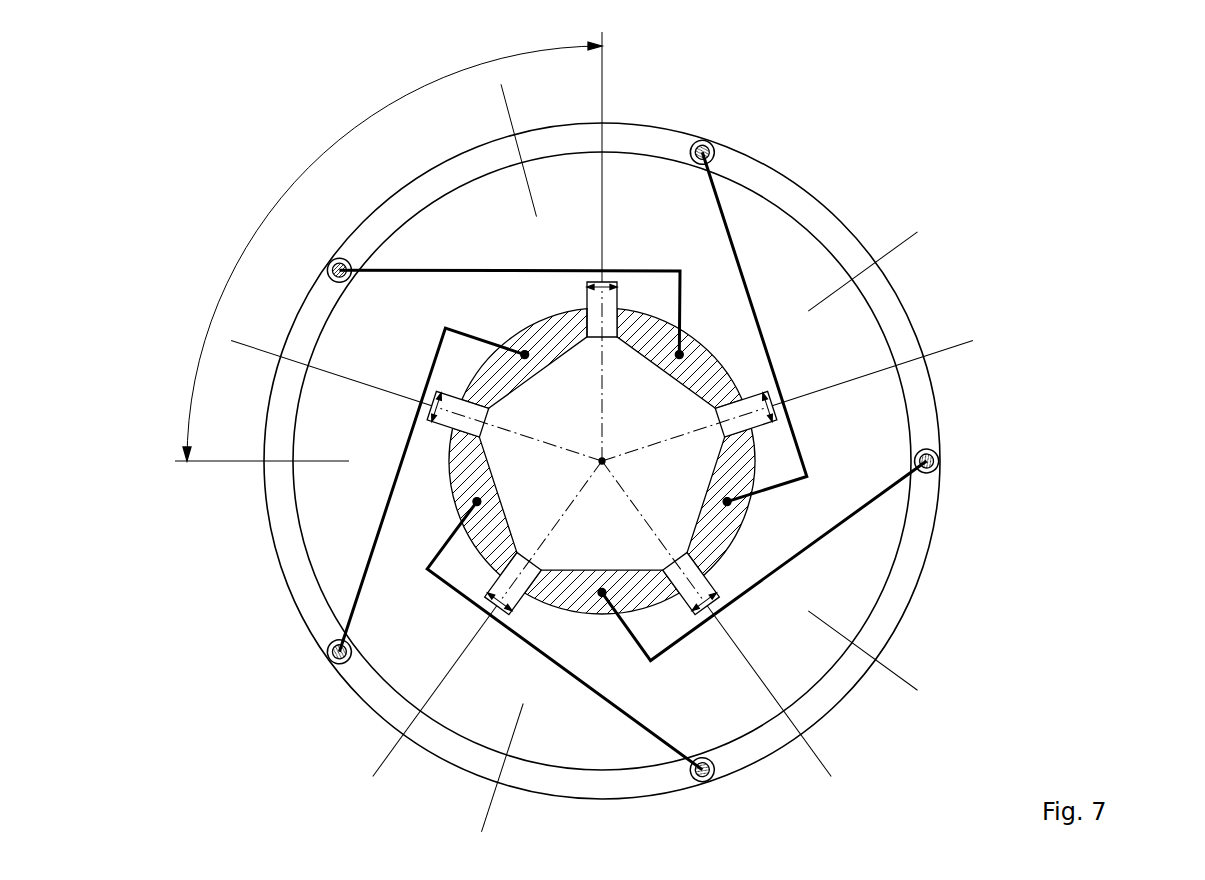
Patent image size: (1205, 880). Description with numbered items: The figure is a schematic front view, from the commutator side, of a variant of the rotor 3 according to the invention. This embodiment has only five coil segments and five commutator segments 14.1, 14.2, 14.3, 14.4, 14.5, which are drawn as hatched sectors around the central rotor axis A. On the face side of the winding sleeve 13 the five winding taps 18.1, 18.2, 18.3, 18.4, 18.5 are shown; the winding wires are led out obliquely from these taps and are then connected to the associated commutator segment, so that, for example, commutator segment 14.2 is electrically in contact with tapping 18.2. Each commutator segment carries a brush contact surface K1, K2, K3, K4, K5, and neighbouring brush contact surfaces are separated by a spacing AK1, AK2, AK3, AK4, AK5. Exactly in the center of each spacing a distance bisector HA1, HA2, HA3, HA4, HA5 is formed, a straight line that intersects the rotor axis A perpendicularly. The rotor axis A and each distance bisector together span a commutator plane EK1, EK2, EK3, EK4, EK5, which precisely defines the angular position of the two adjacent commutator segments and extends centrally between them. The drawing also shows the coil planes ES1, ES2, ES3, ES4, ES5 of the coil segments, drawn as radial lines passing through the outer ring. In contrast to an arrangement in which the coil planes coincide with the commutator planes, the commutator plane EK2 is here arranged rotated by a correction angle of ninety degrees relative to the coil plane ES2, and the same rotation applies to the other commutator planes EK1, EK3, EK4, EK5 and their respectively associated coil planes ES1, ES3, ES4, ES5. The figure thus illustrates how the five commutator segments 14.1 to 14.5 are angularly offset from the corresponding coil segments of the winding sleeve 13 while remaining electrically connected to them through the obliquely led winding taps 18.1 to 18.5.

The rotor 3 is at (930, 272).
The winding sleeve 13 is at (908, 340).
The commutator segment 14.1 is at (708, 500).
The commutator segment 14.2 is at (663, 363).
The commutator segment 14.3 is at (528, 376).
The commutator segment 14.4 is at (490, 480).
The commutator segment 14.5 is at (598, 572).
The winding tap 18.1 is at (701, 141).
The winding tap 18.2 is at (333, 261).
The winding tap 18.3 is at (328, 656).
The winding tap 18.4 is at (706, 782).
The winding tap 18.5 is at (939, 461).
The brush contact surface K1 is at (752, 512).
The brush contact surface K2 is at (713, 348).
The brush contact surface K3 is at (535, 325).
The brush contact surface K4 is at (452, 495).
The brush contact surface K5 is at (591, 618).
The rotor axis A is at (601, 462).
The spacing AK1 is at (779, 412).
The spacing AK2 is at (605, 283).
The spacing AK3 is at (432, 397).
The spacing AK4 is at (490, 606).
The spacing AK5 is at (709, 607).
The commutator plane EK1 is at (958, 346).
The commutator plane EK2 is at (595, 78).
The commutator plane EK3 is at (233, 340).
The commutator plane EK4 is at (383, 762).
The commutator plane EK5 is at (816, 755).
The coil plane ES1 is at (504, 103).
The coil plane ES2 is at (205, 459).
The coil plane ES3 is at (486, 823).
The coil plane ES4 is at (903, 680).
The coil plane ES5 is at (905, 241).
The distance bisector HA1 is at (832, 386).
The distance bisector HA2 is at (603, 212).
The distance bisector HA3 is at (338, 376).
The distance bisector HA4 is at (446, 678).
The distance bisector HA5 is at (758, 675).